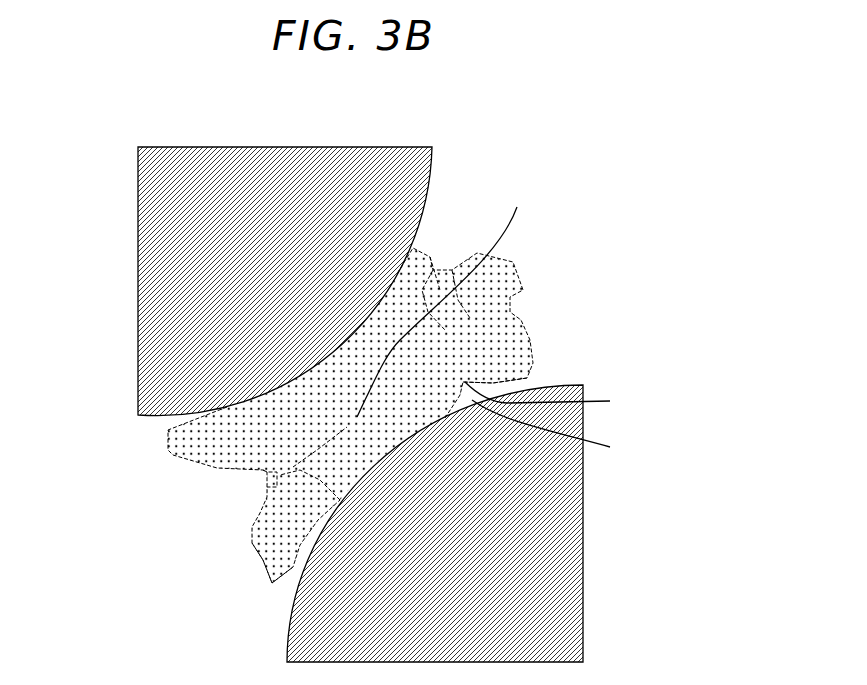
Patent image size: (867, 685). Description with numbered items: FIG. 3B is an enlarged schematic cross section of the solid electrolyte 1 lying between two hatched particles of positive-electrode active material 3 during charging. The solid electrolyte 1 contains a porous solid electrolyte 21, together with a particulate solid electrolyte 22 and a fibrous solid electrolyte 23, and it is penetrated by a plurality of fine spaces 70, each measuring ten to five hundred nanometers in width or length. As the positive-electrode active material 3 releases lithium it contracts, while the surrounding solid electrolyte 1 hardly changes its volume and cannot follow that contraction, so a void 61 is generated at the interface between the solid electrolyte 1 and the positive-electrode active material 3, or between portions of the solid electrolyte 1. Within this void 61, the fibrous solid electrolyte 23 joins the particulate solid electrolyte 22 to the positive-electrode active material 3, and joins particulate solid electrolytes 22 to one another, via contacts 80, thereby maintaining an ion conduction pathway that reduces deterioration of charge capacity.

The solid electrolyte 1 is at (539, 286).
The positive-electrode active material 3 is at (303, 170).
The porous solid electrolyte 21 is at (377, 296).
The particulate solid electrolyte 22 is at (263, 552).
The fibrous solid electrolyte 23 is at (267, 483).
The void 61 is at (520, 383).
The fine spaces 70 is at (445, 296).
The contacts 80 is at (556, 422).